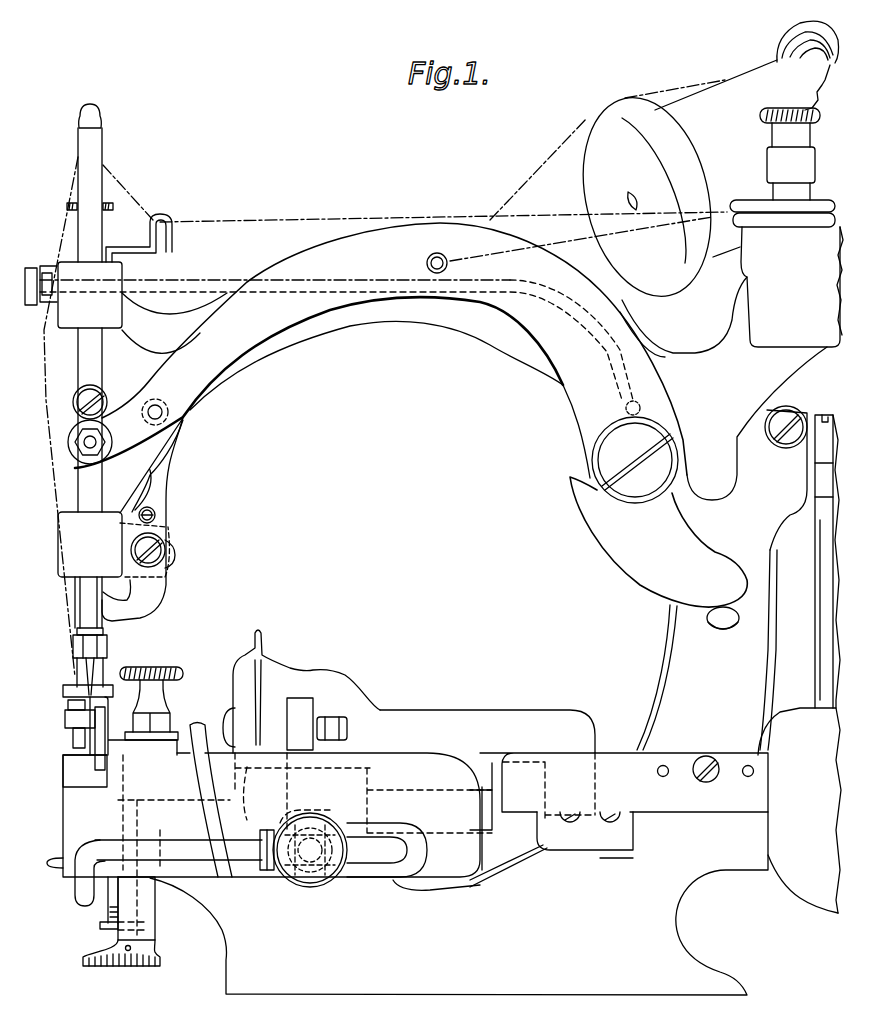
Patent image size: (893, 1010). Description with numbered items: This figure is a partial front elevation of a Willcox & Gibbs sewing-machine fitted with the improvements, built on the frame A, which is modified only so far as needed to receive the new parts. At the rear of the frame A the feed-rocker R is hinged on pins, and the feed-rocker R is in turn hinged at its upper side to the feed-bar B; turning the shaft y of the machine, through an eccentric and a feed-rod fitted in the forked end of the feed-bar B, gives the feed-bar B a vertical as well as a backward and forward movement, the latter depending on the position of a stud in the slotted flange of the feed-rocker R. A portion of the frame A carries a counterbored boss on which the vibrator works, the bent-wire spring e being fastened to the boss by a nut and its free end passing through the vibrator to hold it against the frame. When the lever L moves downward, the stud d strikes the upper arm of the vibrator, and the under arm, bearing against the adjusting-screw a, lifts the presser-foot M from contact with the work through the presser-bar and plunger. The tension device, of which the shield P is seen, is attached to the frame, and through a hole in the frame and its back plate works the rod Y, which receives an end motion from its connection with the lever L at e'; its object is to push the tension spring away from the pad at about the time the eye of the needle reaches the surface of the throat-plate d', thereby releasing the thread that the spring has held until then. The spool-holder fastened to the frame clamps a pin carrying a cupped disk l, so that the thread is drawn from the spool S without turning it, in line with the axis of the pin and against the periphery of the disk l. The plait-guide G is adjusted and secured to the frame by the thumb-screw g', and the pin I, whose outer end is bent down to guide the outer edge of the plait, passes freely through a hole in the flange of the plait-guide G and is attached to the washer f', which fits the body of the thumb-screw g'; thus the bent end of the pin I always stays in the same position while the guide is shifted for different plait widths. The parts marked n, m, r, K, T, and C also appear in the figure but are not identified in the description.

The needle bar knob n is at (90, 308).
The shield P is at (41, 274).
The rod Y is at (336, 336).
The thread hook m is at (149, 238).
The lever L is at (381, 422).
The stud d is at (155, 408).
The adjusting-screw a is at (90, 603).
The bent-wire spring e is at (139, 517).
The clamp screw r is at (144, 564).
The needle clamp K is at (88, 736).
The presser-foot M is at (144, 712).
The frame A is at (407, 874).
The throat-plate d' is at (305, 844).
The plait-guide G is at (211, 800).
The pin I is at (90, 873).
The washer f' is at (265, 839).
The thumb-screw g' is at (350, 848).
The feed-rocker R is at (301, 691).
The feed-bar B is at (574, 761).
The shaft y is at (551, 820).
The connection of rod Y with lever L e' is at (635, 451).
The cupped disk l is at (656, 221).
The spool of thread S is at (747, 139).
The spool pin T is at (786, 227).
The standard post C is at (799, 664).